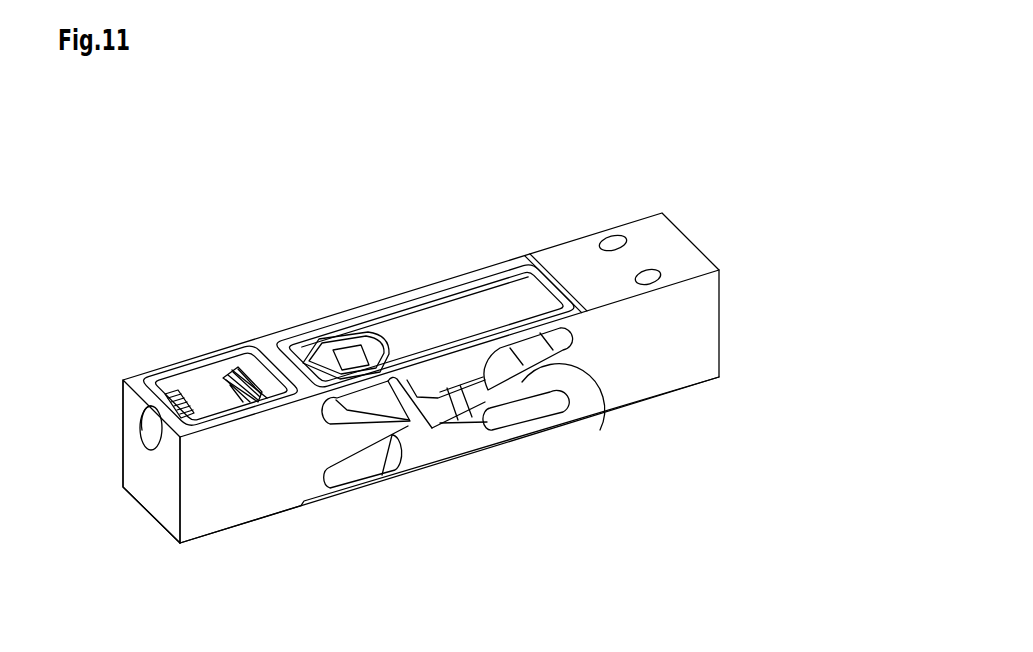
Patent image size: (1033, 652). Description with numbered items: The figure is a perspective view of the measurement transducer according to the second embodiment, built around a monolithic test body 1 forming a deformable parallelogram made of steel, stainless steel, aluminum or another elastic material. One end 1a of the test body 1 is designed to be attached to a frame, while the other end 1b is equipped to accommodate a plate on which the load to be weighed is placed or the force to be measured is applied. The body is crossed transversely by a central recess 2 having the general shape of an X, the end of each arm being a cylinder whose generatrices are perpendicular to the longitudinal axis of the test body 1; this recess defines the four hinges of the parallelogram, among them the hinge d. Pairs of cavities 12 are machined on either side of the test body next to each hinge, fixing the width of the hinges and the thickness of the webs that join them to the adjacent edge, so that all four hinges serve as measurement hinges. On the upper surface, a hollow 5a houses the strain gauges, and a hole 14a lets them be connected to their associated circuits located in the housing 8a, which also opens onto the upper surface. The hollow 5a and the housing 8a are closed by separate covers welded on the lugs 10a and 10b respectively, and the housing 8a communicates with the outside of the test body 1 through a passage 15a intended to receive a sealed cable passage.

The monolithic test body 1 is at (664, 378).
The end 1a is at (239, 531).
The other end 1b is at (672, 260).
The central recess 2 is at (439, 401).
The hollow 5a is at (405, 329).
The housing 8a is at (229, 351).
The lug 10a is at (528, 258).
The lug 10b is at (146, 376).
The cavities 12 is at (507, 330).
The hole 14a is at (259, 387).
The passage 15a is at (146, 429).
The hinge d is at (604, 428).